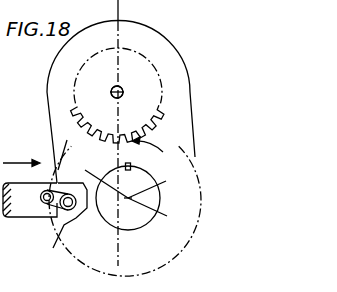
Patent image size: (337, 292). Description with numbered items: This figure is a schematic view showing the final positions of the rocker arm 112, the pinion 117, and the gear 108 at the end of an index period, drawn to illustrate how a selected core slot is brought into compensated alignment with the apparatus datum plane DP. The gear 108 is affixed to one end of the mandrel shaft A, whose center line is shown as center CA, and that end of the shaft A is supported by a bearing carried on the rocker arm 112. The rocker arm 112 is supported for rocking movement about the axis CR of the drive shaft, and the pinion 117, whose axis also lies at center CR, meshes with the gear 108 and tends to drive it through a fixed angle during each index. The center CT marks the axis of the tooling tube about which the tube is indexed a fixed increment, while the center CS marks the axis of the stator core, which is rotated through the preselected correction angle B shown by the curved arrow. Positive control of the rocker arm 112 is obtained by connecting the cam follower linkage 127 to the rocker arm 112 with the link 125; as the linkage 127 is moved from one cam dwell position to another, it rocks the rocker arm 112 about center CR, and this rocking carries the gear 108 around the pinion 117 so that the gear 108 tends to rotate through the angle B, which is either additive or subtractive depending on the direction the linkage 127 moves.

The gear 108 is at (198, 190).
The rocker arm 112 is at (183, 109).
The pinion 117 is at (151, 70).
The link 125 is at (59, 221).
The cam follower linkage 127 is at (31, 202).
The datum plane DP is at (124, 11).
The axis of shaft M CR is at (111, 90).
The center of the tooling tube CT is at (97, 175).
The center of shaft A CA is at (155, 182).
The center of the stator core CS is at (156, 213).
The mandrel shaft A is at (140, 220).
The correction differential angular increment B is at (147, 149).